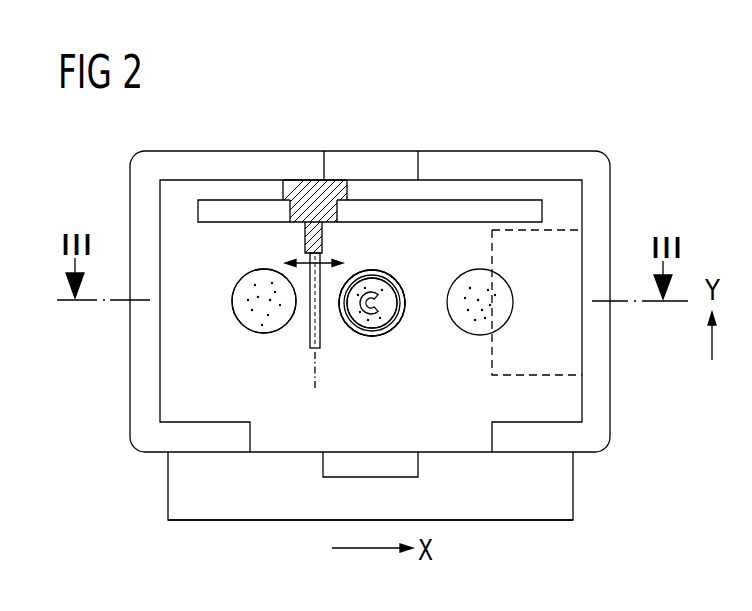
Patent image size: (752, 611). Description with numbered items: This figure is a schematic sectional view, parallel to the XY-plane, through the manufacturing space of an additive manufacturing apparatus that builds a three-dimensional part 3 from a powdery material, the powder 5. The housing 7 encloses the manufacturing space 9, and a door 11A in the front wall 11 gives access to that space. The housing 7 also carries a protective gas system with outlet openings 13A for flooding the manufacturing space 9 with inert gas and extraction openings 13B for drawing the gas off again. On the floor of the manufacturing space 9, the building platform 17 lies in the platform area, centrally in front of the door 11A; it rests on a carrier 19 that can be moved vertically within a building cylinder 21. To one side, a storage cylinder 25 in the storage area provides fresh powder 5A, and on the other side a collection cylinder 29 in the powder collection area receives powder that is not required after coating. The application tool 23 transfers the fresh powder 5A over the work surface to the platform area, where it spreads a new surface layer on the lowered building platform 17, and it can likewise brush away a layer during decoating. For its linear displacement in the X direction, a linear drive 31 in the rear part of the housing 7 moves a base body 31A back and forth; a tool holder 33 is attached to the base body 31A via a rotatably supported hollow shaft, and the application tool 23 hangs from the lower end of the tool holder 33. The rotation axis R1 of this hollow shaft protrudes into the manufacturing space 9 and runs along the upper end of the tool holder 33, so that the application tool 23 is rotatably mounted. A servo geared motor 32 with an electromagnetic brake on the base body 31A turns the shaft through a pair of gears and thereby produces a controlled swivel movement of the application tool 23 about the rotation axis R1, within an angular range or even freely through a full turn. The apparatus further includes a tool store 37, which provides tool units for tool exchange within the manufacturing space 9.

The three-dimensional part 3 is at (388, 328).
The powder 5 is at (356, 329).
The fresh powder 5A is at (231, 276).
The housing 7 is at (522, 139).
The manufacturing space 9 is at (566, 211).
The front wall 11 is at (587, 455).
The door 11A is at (575, 515).
The outlet openings 13A is at (393, 462).
The extraction openings 13B is at (375, 160).
The building platform 17 is at (396, 290).
The carrier 19 is at (388, 297).
The building cylinder 21 is at (418, 325).
The application tool 23 is at (306, 345).
The storage cylinder 25 is at (240, 320).
The collection cylinder 29 is at (511, 286).
The linear drive 31 is at (233, 212).
The base body 31A is at (308, 236).
The servo geared motor 32 is at (312, 182).
The tool holder 33 is at (340, 275).
The tool store 37 is at (570, 353).
The rotation axis R1 is at (312, 378).